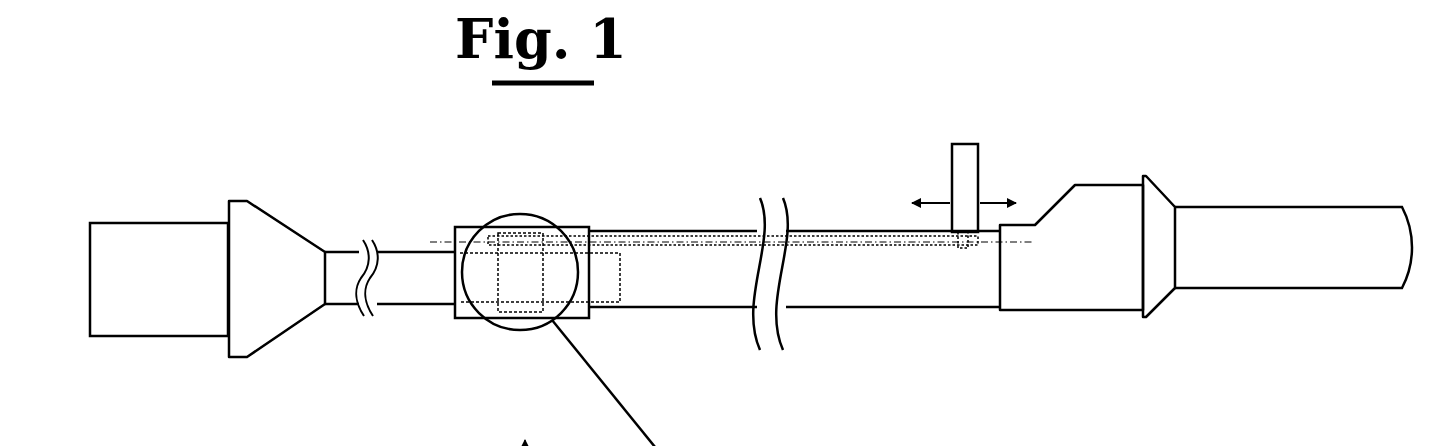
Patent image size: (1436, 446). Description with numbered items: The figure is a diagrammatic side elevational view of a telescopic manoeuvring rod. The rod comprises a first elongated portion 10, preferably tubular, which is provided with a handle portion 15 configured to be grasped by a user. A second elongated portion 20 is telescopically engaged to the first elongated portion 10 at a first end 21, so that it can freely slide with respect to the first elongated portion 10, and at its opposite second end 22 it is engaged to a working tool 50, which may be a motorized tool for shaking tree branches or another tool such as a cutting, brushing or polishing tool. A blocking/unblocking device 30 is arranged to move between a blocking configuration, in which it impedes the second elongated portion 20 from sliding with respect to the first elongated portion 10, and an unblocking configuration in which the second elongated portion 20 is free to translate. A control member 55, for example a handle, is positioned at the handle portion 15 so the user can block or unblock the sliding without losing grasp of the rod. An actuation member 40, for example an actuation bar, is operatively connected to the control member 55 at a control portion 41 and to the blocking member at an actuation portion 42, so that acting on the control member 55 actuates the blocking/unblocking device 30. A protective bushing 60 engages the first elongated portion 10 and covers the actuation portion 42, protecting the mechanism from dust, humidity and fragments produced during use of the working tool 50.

The first elongated portion 10 is at (843, 231).
The handle portion 15 is at (1291, 166).
The second elongated portion 20 is at (427, 272).
The first end 21 is at (607, 303).
The second end 22 is at (340, 295).
The blocking/unblocking device 30 is at (531, 229).
The actuation member 40 is at (652, 241).
The control portion 41 is at (957, 255).
The actuation portion 42 is at (522, 324).
The working tool 50 is at (254, 379).
The control member 55 is at (978, 160).
The protective bushing 60 is at (474, 228).